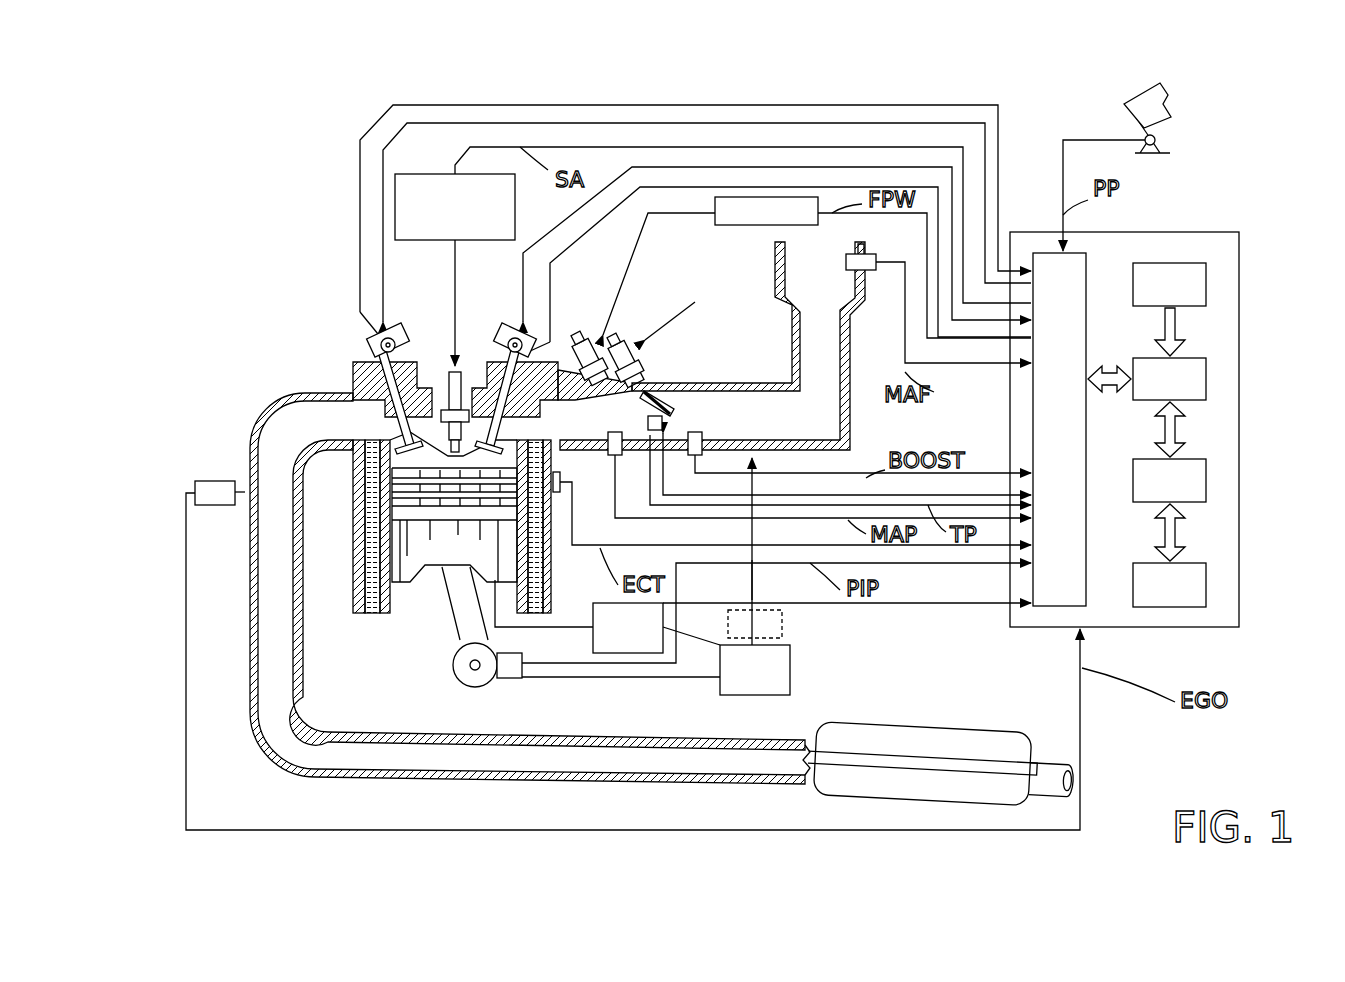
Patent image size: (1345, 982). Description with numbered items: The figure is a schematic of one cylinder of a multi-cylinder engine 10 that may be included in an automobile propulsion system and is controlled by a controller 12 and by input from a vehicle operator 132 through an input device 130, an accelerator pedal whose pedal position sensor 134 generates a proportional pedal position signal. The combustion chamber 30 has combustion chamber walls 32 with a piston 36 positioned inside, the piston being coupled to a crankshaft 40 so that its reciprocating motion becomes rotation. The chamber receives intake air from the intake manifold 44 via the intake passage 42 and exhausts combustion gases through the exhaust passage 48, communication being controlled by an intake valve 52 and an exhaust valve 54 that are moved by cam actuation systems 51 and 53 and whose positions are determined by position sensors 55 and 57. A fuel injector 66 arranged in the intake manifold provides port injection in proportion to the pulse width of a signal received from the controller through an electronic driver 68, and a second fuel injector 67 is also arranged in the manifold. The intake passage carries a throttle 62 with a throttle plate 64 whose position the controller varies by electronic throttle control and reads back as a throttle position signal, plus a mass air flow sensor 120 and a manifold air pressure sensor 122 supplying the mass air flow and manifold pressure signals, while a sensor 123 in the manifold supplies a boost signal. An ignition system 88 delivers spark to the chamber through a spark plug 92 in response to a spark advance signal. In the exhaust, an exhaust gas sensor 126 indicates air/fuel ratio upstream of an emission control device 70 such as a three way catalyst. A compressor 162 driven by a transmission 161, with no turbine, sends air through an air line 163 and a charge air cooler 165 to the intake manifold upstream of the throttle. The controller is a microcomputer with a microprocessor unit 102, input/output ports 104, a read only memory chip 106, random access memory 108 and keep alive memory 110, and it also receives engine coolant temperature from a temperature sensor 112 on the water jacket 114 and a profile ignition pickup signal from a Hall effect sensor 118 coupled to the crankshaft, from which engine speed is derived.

The engine 10 is at (283, 313).
The controller 12 is at (1240, 232).
The combustion chamber 30 is at (457, 457).
The combustion chamber walls 32 is at (400, 597).
The piston 36 is at (455, 553).
The crankshaft 40 is at (462, 680).
The intake passage 42 is at (733, 316).
The intake manifold 44 is at (712, 346).
The exhaust passage 48 is at (530, 588).
The cam actuation system 51 is at (507, 332).
The intake valve 52 is at (490, 432).
The cam actuation system 53 is at (392, 332).
The exhaust valve 54 is at (347, 392).
The position sensor 55 is at (530, 350).
The position sensor 57 is at (372, 348).
The throttle 62 is at (652, 395).
The throttle plate 64 is at (668, 416).
The fuel injector 66 is at (586, 348).
The second fuel injector 67 is at (628, 348).
The electronic driver 68 is at (720, 226).
The emission control device 70 is at (985, 728).
The ignition system 88 is at (408, 174).
The spark plug 92 is at (458, 370).
The microprocessor unit 102 is at (1207, 388).
The input/output ports 104 is at (1088, 266).
The read only memory chip 106 is at (1207, 286).
The random access memory 108 is at (1207, 484).
The keep alive memory 110 is at (1207, 590).
The temperature sensor 112 is at (562, 485).
The water jacket 114 is at (535, 528).
The Hall effect sensor 118 is at (510, 683).
The mass air flow sensor 120 is at (864, 273).
The manifold air pressure sensor 122 is at (607, 452).
The sensor 123 is at (692, 458).
The exhaust gas sensor 126 is at (196, 490).
The input device 130 is at (1130, 110).
The vehicle operator 132 is at (1178, 97).
The pedal position sensor 134 is at (1170, 147).
The transmission 161 is at (628, 628).
The compressor 162 is at (755, 670).
The air line 163 is at (753, 575).
The charge air cooler 165 is at (755, 624).